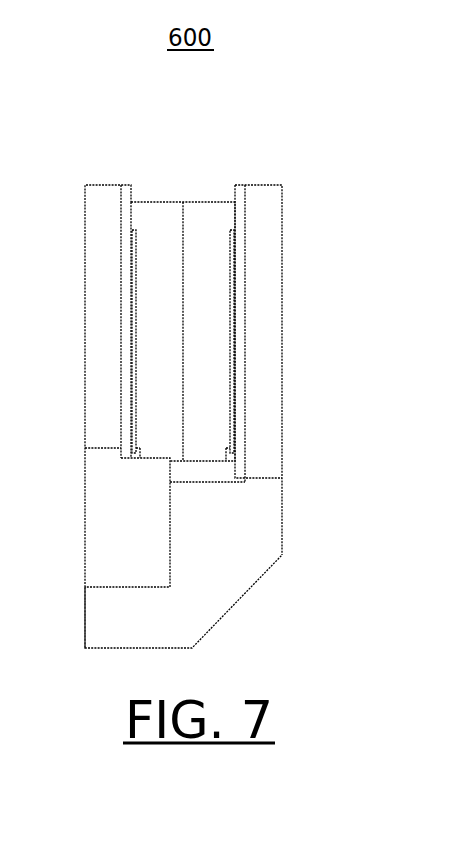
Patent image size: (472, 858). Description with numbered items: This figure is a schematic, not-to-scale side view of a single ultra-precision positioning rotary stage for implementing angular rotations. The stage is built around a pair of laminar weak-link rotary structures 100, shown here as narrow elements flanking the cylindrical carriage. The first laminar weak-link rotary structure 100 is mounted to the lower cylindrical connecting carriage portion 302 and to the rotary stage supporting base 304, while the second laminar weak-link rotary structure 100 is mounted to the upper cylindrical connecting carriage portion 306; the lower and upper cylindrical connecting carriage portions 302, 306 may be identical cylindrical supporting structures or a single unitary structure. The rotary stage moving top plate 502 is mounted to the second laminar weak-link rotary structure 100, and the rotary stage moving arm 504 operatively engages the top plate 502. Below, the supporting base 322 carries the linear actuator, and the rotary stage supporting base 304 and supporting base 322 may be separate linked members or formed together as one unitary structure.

The laminar weak-link rotary structure 100 is at (130, 218).
The rotary stage moving top plate 502 is at (98, 215).
The rotary stage moving arm 504 is at (97, 513).
The supporting base 322 is at (257, 540).
The rotary stage supporting base 304 is at (272, 255).
The lower cylindrical connecting carriage portion 302 is at (218, 330).
The upper cylindrical connecting carriage portion 306 is at (147, 327).